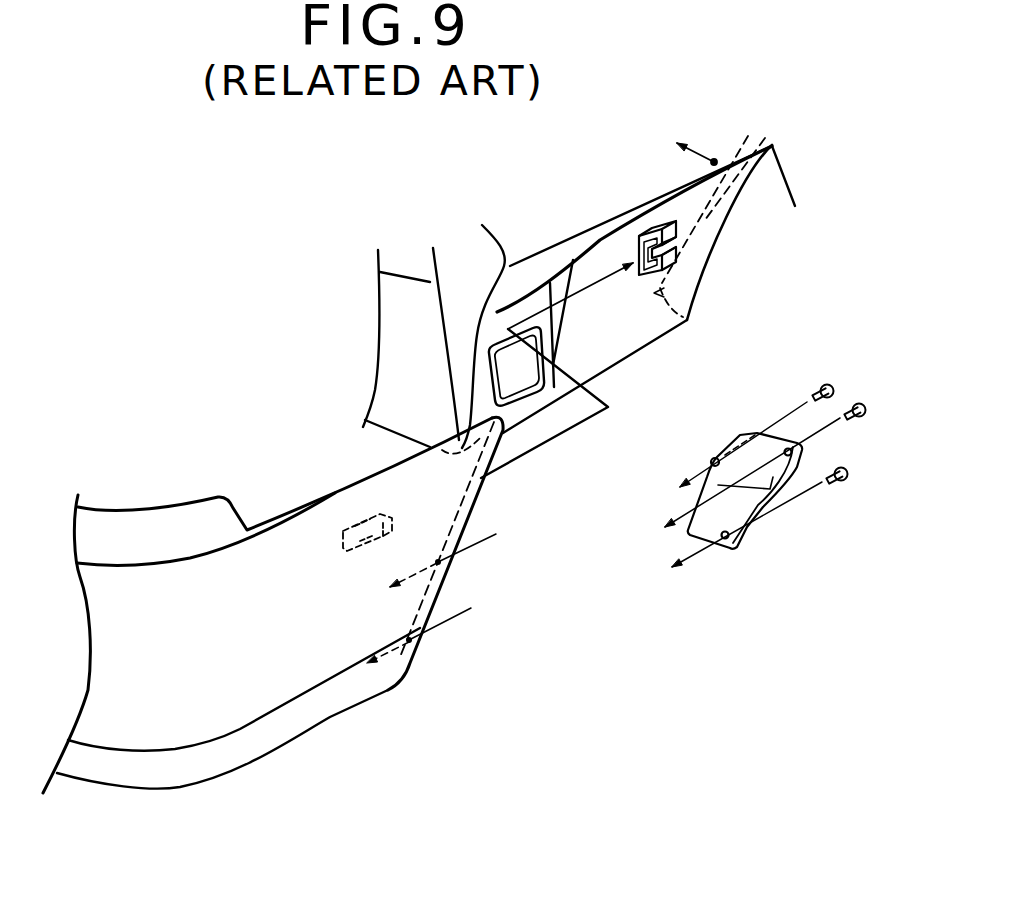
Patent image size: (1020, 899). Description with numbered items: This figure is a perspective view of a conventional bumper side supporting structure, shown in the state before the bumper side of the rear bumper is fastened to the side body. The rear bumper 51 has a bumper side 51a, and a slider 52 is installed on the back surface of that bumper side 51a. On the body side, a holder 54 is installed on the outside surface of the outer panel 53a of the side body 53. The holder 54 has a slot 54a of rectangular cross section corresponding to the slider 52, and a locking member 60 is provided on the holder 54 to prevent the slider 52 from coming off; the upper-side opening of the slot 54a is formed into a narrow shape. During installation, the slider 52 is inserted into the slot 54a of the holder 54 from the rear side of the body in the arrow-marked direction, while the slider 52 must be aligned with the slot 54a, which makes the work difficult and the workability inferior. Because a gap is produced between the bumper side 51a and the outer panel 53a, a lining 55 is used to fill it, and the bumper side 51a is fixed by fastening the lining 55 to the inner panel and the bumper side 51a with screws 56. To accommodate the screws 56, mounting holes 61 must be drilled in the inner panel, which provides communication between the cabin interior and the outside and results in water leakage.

The rear bumper 51 is at (125, 498).
The bumper side 51a is at (332, 665).
The slider 52 is at (350, 520).
The side body 53 is at (566, 193).
The outer panel 53a is at (642, 340).
The holder 54 is at (657, 227).
The slot 54a is at (673, 244).
The lining 55 is at (745, 514).
The screws 56 is at (830, 388).
The locking member 60 is at (673, 262).
The mounting holes 61 is at (714, 162).